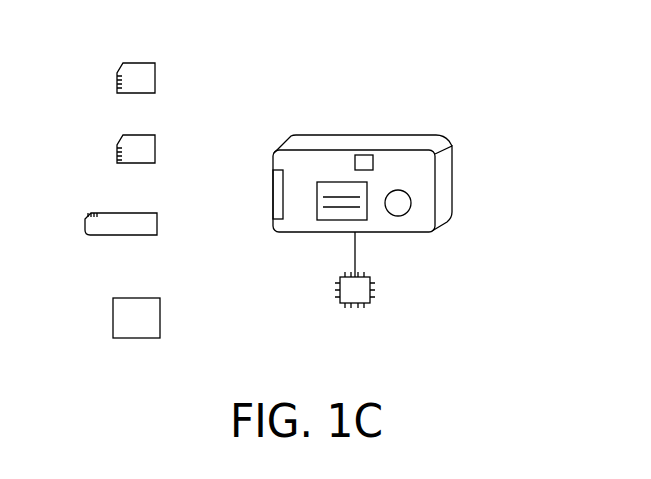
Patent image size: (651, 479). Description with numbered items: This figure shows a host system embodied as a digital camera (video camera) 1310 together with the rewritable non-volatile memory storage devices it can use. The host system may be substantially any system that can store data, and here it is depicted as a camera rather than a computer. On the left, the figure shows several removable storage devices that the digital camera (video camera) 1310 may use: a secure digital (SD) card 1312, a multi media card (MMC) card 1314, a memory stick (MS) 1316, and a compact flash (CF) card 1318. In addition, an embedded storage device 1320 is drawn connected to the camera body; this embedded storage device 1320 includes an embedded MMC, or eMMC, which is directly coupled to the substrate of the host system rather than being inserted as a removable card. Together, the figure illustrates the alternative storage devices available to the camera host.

The digital camera (video camera) 1310 is at (453, 170).
The secure digital (SD) card 1312 is at (156, 69).
The multi media card (MMC) card 1314 is at (156, 141).
The memory stick (MS) 1316 is at (158, 225).
The compact flash (CF) card 1318 is at (161, 313).
The embedded storage device 1320 is at (372, 292).